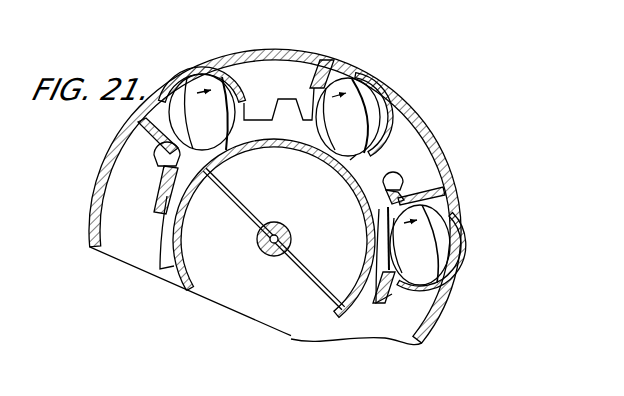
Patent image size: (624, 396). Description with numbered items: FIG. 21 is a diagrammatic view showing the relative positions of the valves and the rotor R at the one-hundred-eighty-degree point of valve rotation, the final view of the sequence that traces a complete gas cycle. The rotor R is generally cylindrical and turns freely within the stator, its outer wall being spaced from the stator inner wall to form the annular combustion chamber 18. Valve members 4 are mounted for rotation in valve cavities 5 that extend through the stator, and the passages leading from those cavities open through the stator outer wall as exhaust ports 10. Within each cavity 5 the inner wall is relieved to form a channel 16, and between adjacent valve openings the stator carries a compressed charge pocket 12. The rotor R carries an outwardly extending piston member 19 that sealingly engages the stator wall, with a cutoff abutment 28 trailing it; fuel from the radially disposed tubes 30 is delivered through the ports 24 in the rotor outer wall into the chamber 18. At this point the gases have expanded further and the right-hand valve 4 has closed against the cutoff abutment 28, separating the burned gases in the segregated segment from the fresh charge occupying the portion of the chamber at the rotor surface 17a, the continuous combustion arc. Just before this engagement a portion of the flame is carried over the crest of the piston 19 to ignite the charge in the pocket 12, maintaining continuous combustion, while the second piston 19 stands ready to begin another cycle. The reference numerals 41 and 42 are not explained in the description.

The valve member 4 is at (423, 233).
The valve cavity 5 is at (177, 113).
The exhaust port 10 is at (152, 100).
The compressed charge pocket 12 is at (288, 104).
The channel 16 is at (210, 78).
The outer surface of the rotor 17a is at (348, 216).
The annular combustion chamber 18 is at (358, 188).
The piston member 19 is at (170, 245).
The port 24 is at (228, 160).
The cutoff abutment 28 is at (350, 160).
The radially-disposed tube 30 is at (241, 211).
The ball pocket 41 is at (236, 80).
The ball pocket 42 is at (350, 103).
The rotor R is at (178, 282).